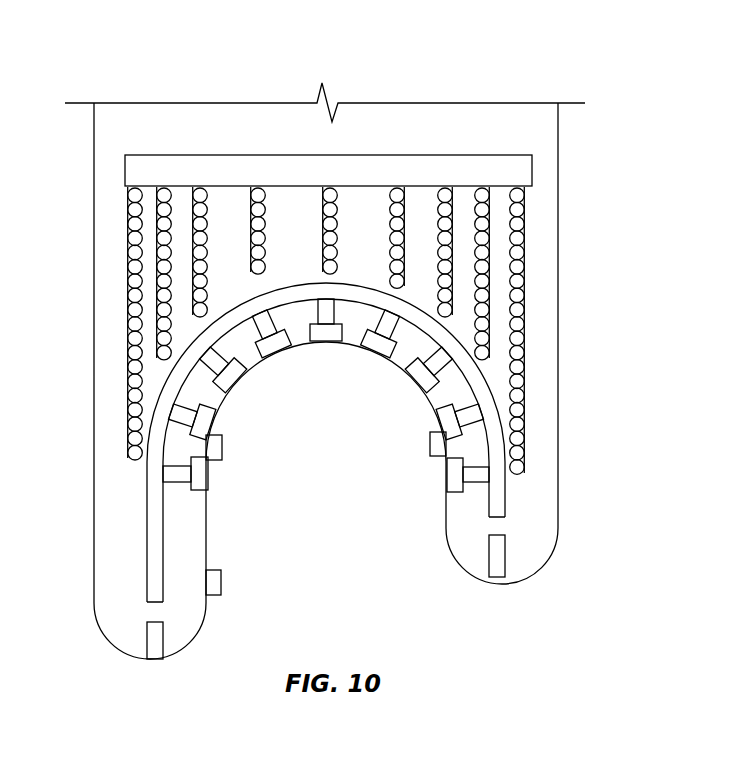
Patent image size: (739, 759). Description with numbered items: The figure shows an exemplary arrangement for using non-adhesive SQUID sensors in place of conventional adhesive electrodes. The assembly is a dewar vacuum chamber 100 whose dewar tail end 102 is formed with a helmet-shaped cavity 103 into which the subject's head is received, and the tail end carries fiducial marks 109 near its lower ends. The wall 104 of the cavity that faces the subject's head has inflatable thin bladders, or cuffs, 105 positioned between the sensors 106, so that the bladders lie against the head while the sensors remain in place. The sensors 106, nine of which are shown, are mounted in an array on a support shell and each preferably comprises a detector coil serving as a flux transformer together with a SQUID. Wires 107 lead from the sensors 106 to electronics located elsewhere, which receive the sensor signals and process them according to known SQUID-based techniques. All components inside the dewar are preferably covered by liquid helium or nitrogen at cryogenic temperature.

The dewar vacuum chamber 100 is at (385, 376).
The dewar tail end 102 is at (552, 394).
The helmet-shaped cavity 103 is at (371, 500).
The wall 104 is at (225, 398).
The inflatable thin bladders 105 is at (222, 583).
The sensors 106 is at (198, 480).
The wires 107 is at (523, 288).
The fiducial marks 109 is at (154, 657).